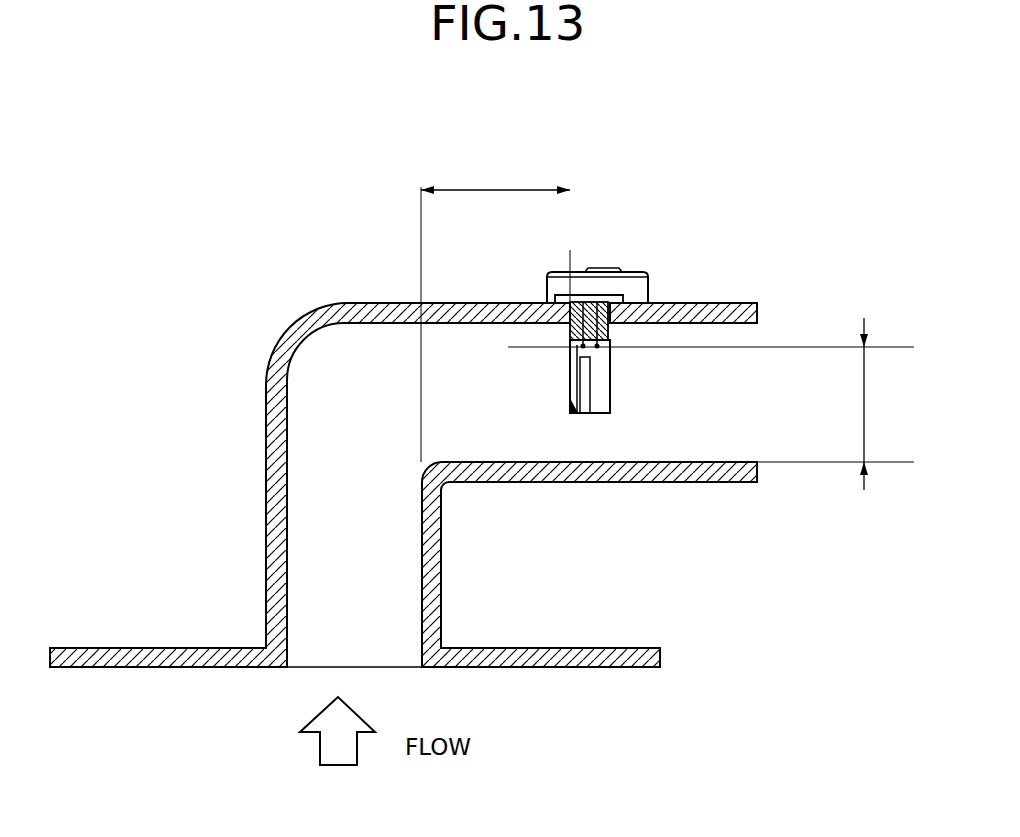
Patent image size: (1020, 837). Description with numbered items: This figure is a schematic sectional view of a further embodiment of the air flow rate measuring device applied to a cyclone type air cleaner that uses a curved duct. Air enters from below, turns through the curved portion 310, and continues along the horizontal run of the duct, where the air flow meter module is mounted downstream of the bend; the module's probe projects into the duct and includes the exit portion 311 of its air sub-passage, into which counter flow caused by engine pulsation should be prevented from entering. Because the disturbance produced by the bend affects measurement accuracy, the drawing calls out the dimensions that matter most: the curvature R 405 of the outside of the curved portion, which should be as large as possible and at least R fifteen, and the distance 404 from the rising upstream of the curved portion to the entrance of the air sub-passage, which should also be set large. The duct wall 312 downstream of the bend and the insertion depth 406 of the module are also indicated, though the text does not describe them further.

The curved portion 310 is at (284, 362).
The exit portion of the air sub-passage 311 is at (598, 407).
The pipe wall downstream of bend 312 is at (510, 468).
The distance from the rising upstream of the curved portion to the entrance of the a 404 is at (495, 307).
The curvature R of the outside of the curved portion 405 is at (357, 392).
The sensor insertion depth 406 is at (711, 404).